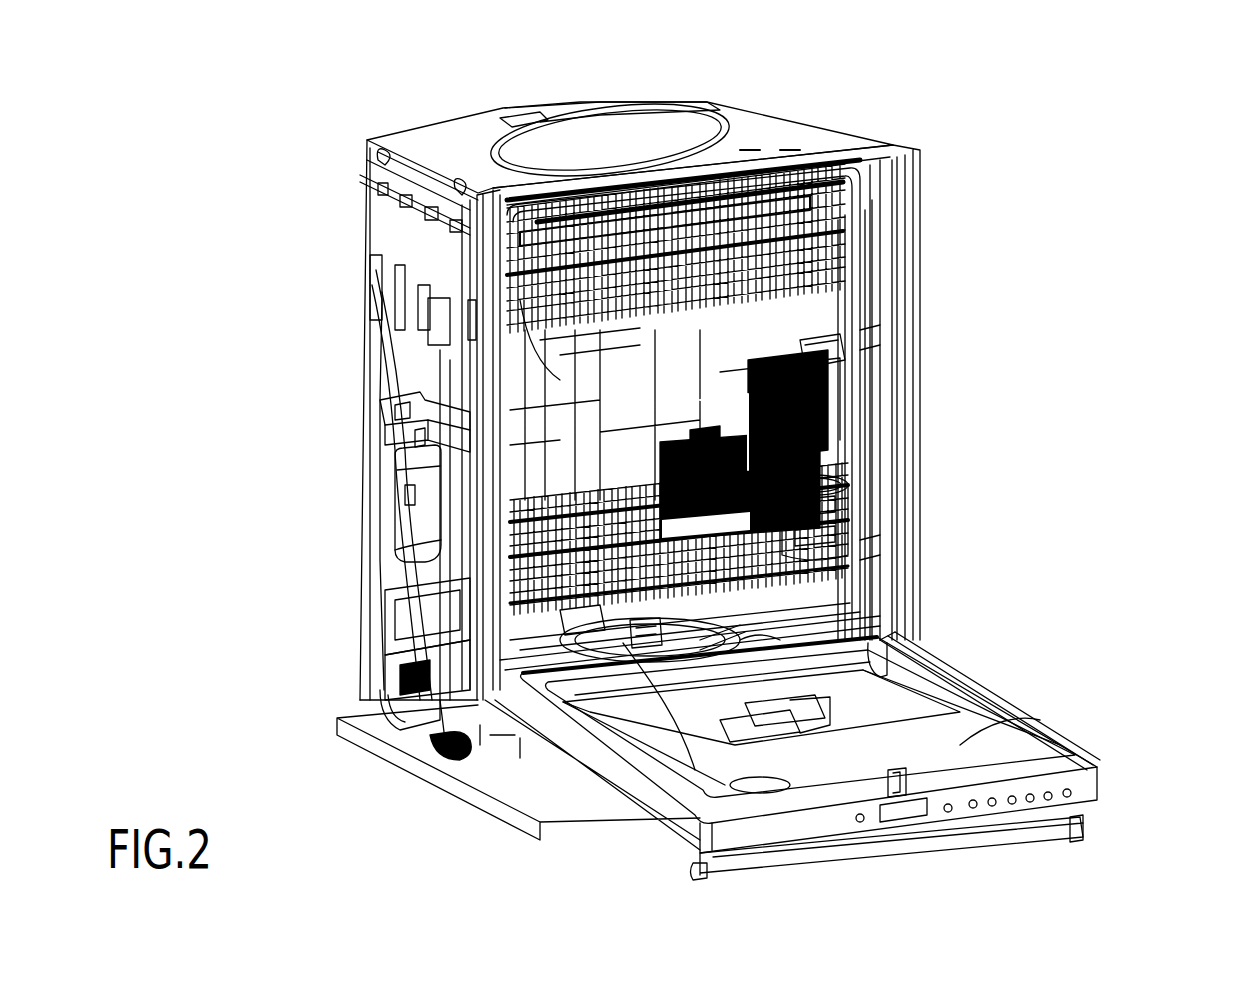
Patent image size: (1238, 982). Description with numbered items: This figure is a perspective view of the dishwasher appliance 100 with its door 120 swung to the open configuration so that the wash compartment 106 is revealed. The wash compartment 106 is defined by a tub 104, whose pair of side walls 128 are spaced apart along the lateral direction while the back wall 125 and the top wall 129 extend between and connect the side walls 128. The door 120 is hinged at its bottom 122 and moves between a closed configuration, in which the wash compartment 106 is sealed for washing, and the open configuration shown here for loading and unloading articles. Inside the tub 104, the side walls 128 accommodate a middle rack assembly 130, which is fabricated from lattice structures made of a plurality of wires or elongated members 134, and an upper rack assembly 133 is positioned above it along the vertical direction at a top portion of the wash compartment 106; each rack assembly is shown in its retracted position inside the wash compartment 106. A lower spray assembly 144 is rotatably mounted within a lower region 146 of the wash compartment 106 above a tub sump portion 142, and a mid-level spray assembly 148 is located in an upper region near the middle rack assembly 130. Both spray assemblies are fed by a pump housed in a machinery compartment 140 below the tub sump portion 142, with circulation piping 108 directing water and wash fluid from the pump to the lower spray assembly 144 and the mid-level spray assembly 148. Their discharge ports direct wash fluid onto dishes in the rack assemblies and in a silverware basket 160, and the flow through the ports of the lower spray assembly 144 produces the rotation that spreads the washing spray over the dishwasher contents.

The dishwasher appliance 100 is at (1063, 142).
The tub 104 is at (357, 233).
The wash compartment 106 is at (553, 422).
The circulation piping 108 is at (412, 625).
The door 120 is at (960, 747).
The bottom 122 is at (935, 637).
The back wall 125 is at (650, 404).
The side walls 128 is at (385, 468).
The top wall 129 is at (690, 118).
The middle rack assembly 130 is at (497, 266).
The upper rack assembly 133 is at (807, 202).
The elongated members 134 is at (855, 270).
The machinery compartment 140 is at (362, 698).
The tub sump portion 142 is at (440, 742).
The lower spray assembly 144 is at (605, 625).
The lower region 146 is at (792, 625).
The mid-level spray assembly 148 is at (870, 402).
The silverware basket 160 is at (850, 470).